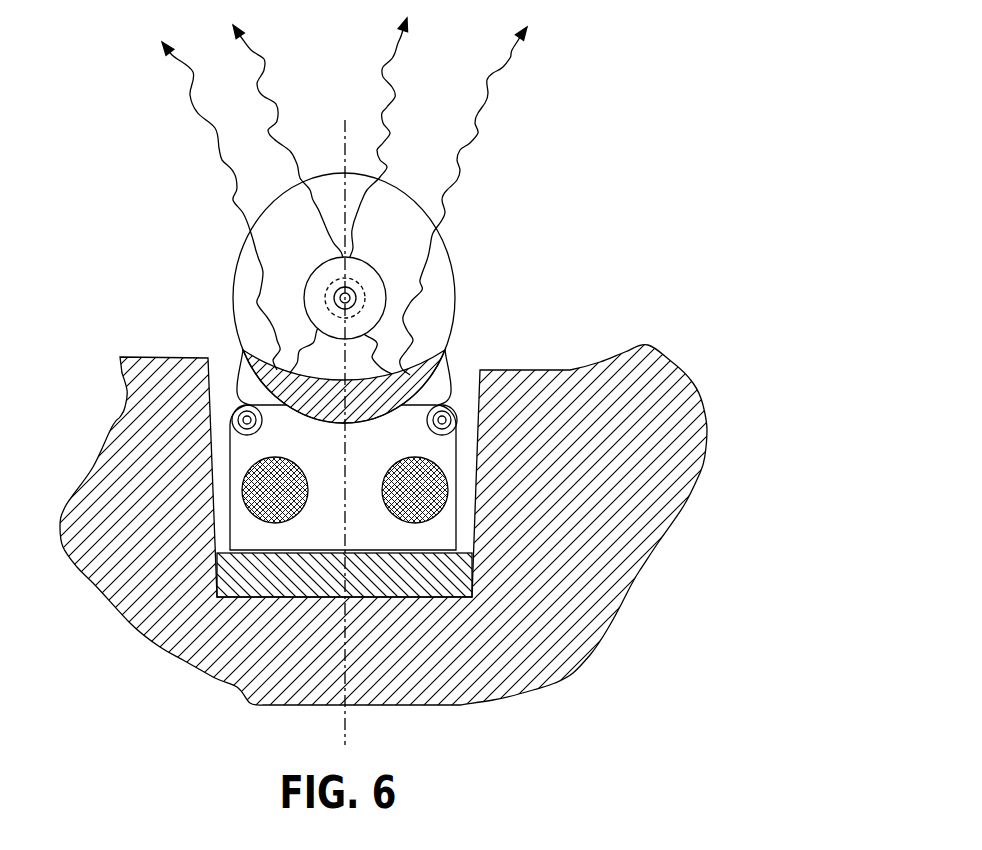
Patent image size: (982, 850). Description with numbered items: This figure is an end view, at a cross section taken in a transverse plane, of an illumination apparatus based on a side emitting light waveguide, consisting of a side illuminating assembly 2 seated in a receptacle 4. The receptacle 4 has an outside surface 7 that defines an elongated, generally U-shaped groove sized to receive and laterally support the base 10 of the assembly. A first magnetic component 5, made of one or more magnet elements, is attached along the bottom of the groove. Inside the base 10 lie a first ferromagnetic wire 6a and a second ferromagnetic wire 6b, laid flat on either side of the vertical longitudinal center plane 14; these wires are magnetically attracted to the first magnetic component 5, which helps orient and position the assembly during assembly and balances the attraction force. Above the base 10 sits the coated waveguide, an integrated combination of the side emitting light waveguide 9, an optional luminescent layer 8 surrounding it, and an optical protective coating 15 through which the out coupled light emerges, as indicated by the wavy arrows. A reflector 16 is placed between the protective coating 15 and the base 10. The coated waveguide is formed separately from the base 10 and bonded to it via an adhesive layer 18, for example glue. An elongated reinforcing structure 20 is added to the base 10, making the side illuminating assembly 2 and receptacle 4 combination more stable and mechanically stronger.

The side illuminating assembly 2 is at (220, 259).
The receptacle 4 is at (643, 528).
The first magnetic component 5 is at (475, 571).
The first ferromagnetic wire 6a is at (293, 478).
The second ferromagnetic wire 6b is at (430, 477).
The outside surface 7 is at (237, 388).
The luminescent layer 8 is at (373, 308).
The side emitting light waveguide 9 is at (335, 297).
The base 10 is at (334, 540).
The vertical longitudinal center plane 14 is at (346, 127).
The optical protective coating 15 is at (387, 230).
The reflector 16 is at (413, 380).
The adhesive layer 18 is at (235, 408).
The elongated reinforcing structure 20 is at (427, 421).